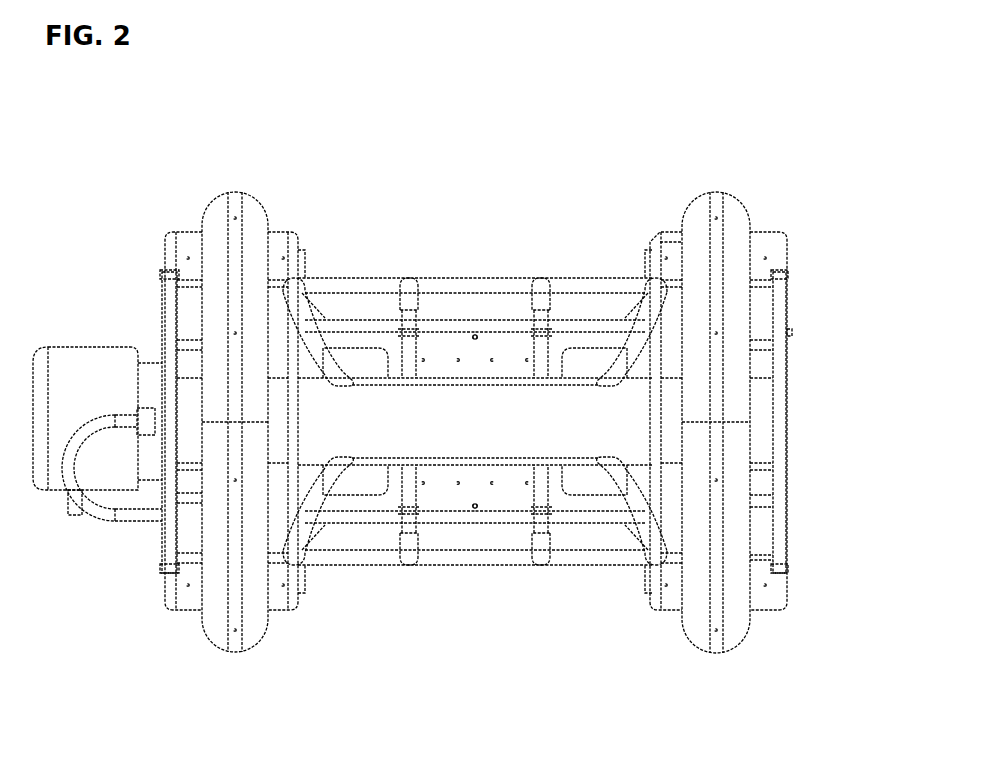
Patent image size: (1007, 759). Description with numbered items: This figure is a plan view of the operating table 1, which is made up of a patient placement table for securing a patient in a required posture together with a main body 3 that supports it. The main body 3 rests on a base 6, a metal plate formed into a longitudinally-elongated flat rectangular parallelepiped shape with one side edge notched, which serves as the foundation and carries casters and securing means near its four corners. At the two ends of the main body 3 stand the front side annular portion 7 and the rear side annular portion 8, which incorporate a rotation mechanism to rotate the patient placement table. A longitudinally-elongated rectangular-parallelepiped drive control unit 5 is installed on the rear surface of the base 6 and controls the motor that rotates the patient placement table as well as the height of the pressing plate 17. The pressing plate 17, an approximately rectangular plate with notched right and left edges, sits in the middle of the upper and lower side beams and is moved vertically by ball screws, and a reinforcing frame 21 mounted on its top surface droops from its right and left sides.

The operating table 1 is at (571, 97).
The main body 3 is at (793, 410).
The drive control unit 5 is at (79, 363).
The base 6 is at (187, 598).
The front side annular portion 7 is at (742, 200).
The rear side annular portion 8 is at (258, 196).
The pressing plate 17 is at (372, 517).
The reinforcing frame 21 is at (480, 562).